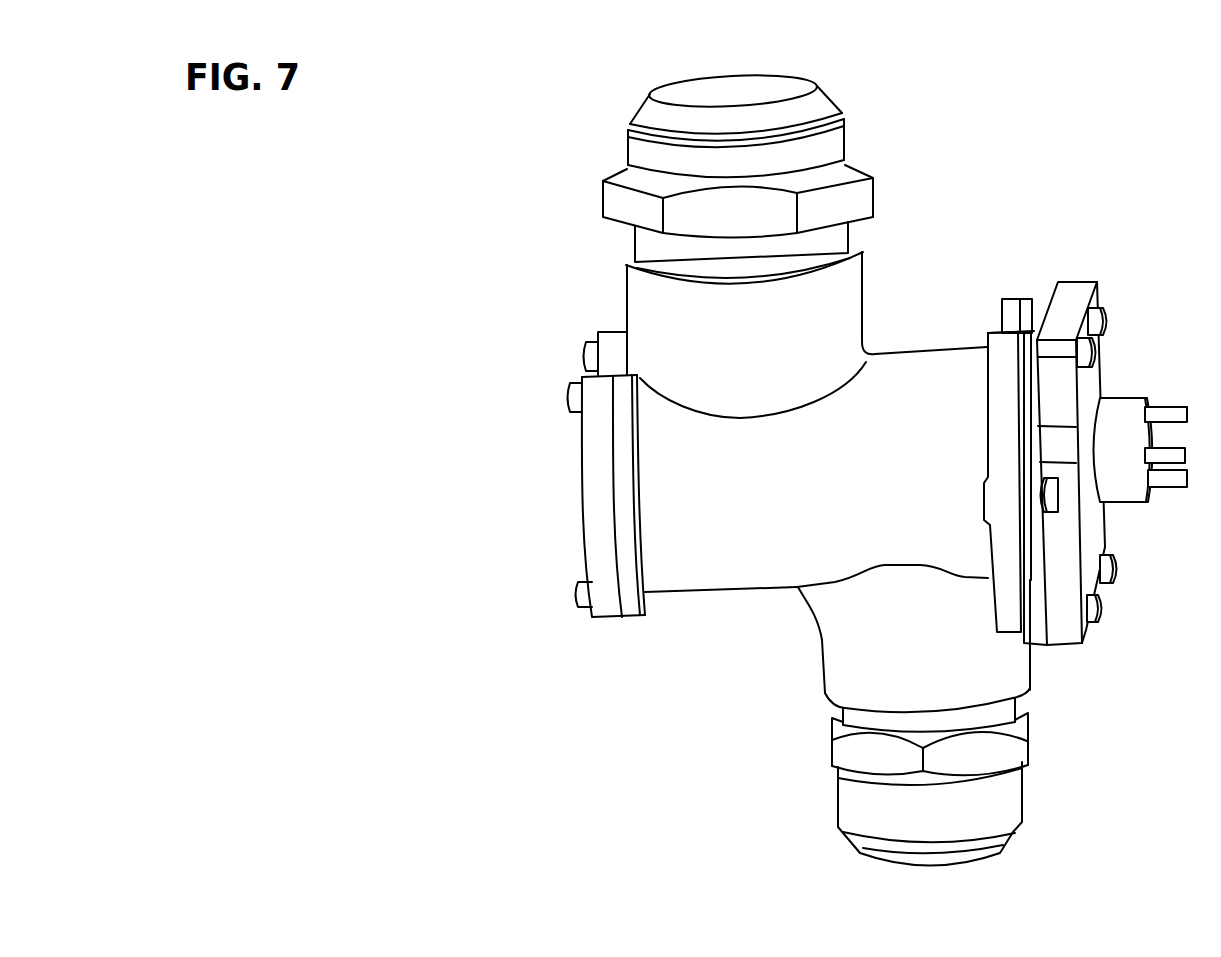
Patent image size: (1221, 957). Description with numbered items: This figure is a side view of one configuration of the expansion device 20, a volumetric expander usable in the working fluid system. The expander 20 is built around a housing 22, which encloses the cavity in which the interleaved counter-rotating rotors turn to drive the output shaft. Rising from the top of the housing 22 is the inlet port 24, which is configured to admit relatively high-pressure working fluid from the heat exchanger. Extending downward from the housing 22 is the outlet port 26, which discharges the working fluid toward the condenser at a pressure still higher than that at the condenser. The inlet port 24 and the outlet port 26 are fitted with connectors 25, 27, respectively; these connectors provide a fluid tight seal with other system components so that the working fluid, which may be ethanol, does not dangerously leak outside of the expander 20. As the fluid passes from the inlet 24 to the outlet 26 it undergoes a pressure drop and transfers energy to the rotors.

The expansion device 20 is at (457, 222).
The housing 22 is at (680, 592).
The inlet port 24 is at (625, 298).
The connector 25 is at (627, 143).
The outlet port 26 is at (840, 668).
The connector 27 is at (852, 820).